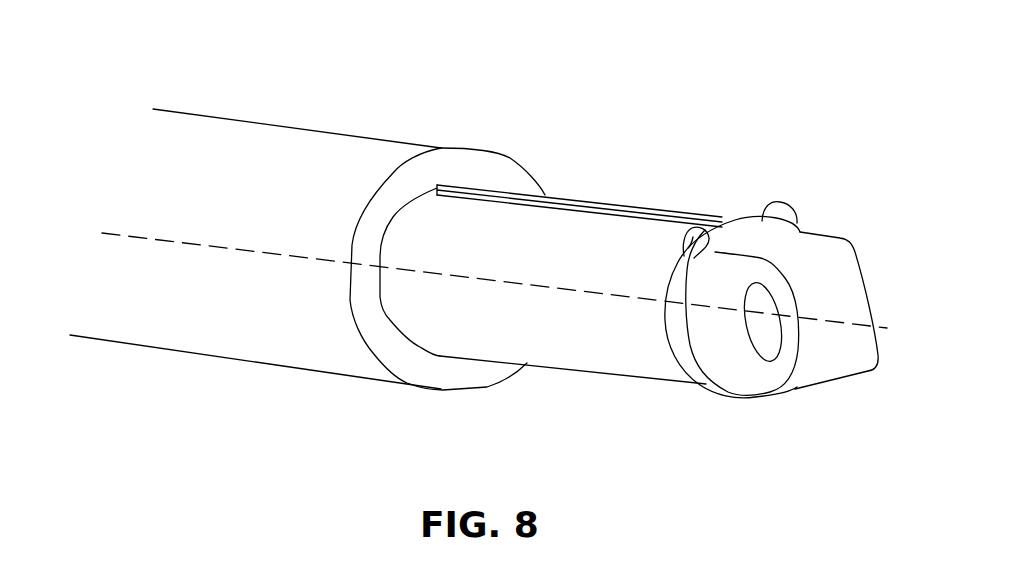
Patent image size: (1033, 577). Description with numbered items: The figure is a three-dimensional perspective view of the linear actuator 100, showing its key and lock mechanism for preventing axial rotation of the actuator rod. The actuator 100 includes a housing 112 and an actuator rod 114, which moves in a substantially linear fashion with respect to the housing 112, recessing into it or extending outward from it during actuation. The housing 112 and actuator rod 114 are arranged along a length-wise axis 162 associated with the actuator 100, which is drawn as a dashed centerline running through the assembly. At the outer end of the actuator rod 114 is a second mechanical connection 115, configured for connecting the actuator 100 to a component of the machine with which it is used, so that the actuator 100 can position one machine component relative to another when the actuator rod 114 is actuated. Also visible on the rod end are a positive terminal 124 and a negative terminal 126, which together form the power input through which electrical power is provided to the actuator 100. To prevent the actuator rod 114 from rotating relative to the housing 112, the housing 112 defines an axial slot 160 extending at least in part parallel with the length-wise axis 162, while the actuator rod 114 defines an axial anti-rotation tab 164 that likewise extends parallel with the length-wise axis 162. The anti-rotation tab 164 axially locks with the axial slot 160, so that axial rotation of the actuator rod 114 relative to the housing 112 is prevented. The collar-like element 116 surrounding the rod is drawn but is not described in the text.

The linear actuator 100 is at (570, 96).
The housing 112 is at (256, 116).
The actuator rod 114 is at (598, 384).
The second mechanical connection 115 is at (768, 330).
The flange / collar 116 is at (411, 317).
The positive terminal 124 is at (782, 217).
The negative terminal 126 is at (683, 256).
The axial slot 160 is at (437, 188).
The length-wise axis 162 is at (193, 243).
The axial anti-rotation tab 164 is at (505, 188).